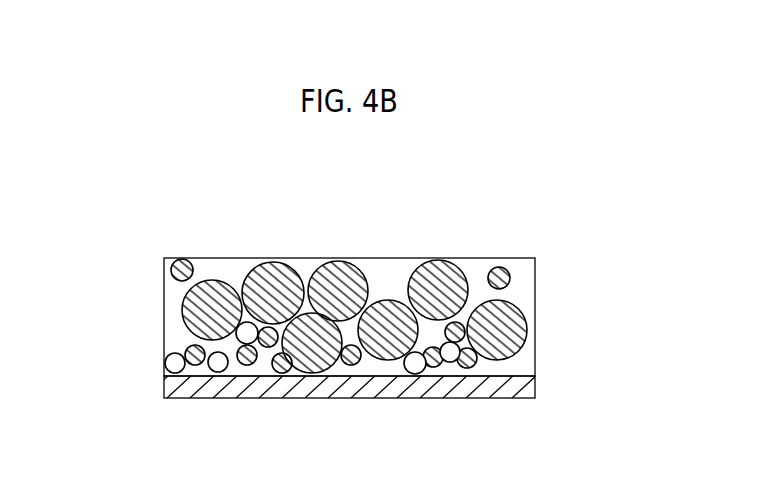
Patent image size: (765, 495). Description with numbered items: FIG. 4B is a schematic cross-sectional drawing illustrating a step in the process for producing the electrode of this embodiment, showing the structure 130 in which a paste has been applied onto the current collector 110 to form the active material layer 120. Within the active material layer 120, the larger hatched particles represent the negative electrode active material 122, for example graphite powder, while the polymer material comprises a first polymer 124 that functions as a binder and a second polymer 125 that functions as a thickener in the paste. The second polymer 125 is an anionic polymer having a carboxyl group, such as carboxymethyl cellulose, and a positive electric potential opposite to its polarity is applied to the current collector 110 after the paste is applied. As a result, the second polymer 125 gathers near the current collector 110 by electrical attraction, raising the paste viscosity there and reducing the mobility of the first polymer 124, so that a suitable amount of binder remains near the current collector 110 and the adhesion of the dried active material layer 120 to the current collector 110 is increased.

The current collector 110 is at (518, 387).
The active material layer 120 is at (502, 250).
The negative electrode active material 122 is at (437, 260).
The first polymer 124 is at (178, 258).
The second polymer 125 is at (170, 363).
The light scattering member 130 is at (154, 220).